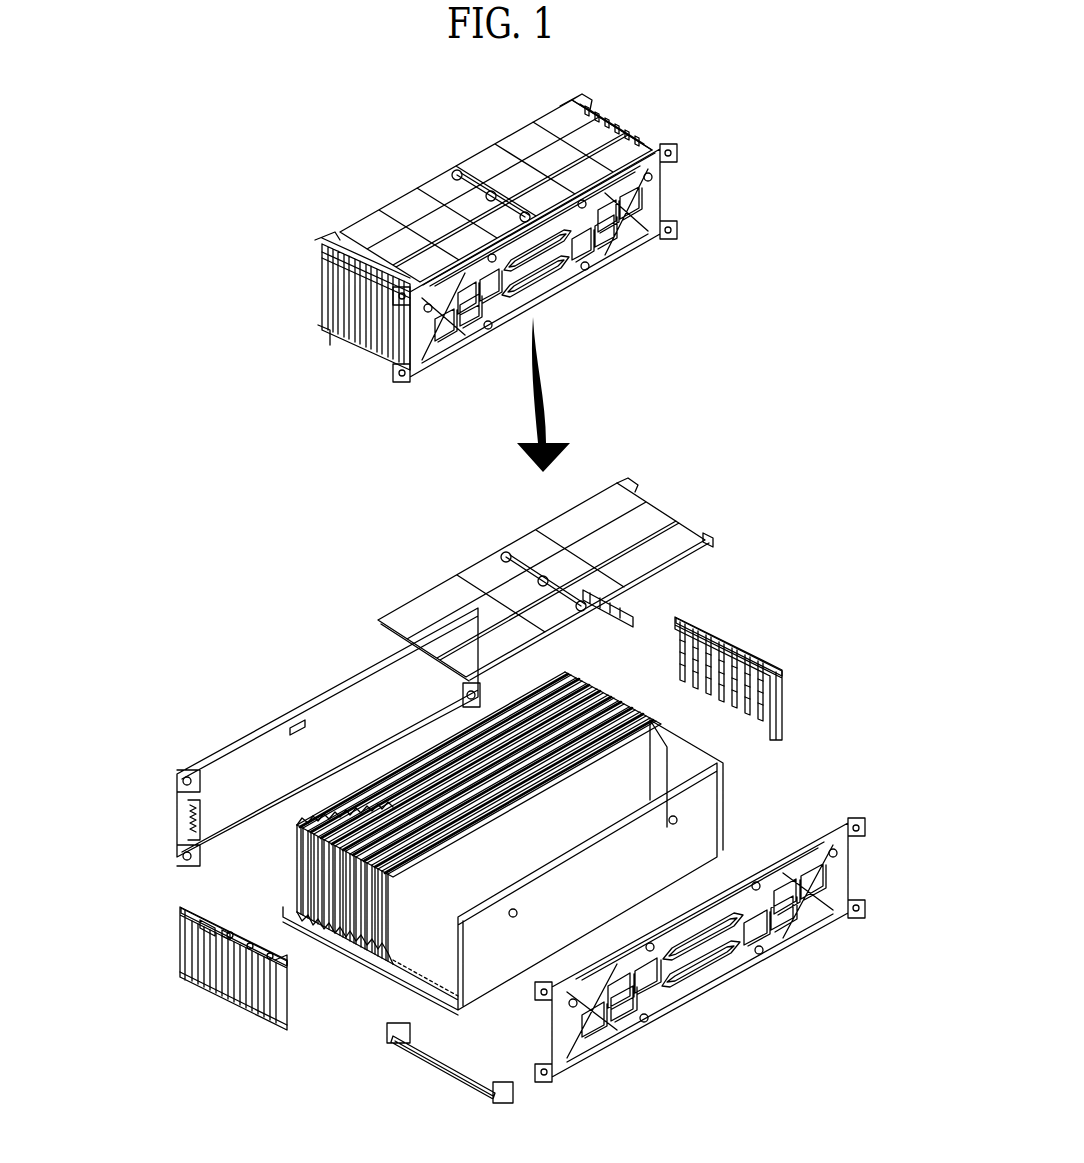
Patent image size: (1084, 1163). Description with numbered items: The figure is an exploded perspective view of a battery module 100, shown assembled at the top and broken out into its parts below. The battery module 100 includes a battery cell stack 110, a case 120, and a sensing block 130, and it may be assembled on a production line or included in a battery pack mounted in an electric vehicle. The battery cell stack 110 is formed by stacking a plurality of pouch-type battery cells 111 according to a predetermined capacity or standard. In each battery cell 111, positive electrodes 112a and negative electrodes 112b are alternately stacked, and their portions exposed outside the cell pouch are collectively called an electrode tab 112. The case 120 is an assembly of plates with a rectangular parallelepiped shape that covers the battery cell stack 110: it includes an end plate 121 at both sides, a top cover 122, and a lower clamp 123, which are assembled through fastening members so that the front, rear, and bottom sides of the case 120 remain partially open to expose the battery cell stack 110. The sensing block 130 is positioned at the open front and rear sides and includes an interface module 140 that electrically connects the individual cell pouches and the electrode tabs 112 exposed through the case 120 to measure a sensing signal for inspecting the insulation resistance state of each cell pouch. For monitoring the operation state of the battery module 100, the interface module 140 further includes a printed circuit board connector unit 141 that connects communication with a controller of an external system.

The battery module 100 is at (445, 158).
The battery cell stack 110 is at (387, 935).
The battery cell 111 is at (487, 1000).
The electrode tab 112 is at (230, 860).
The positive electrode 112a is at (297, 883).
The negative electrode 112b is at (317, 903).
The case 120 is at (218, 548).
The end plate 121 is at (242, 752).
The top cover 122 is at (484, 566).
The lower clamp 123 is at (443, 1072).
The sensing block 130 is at (788, 703).
The interface module 140 is at (722, 650).
The printed circuit board connector unit 141 is at (205, 928).